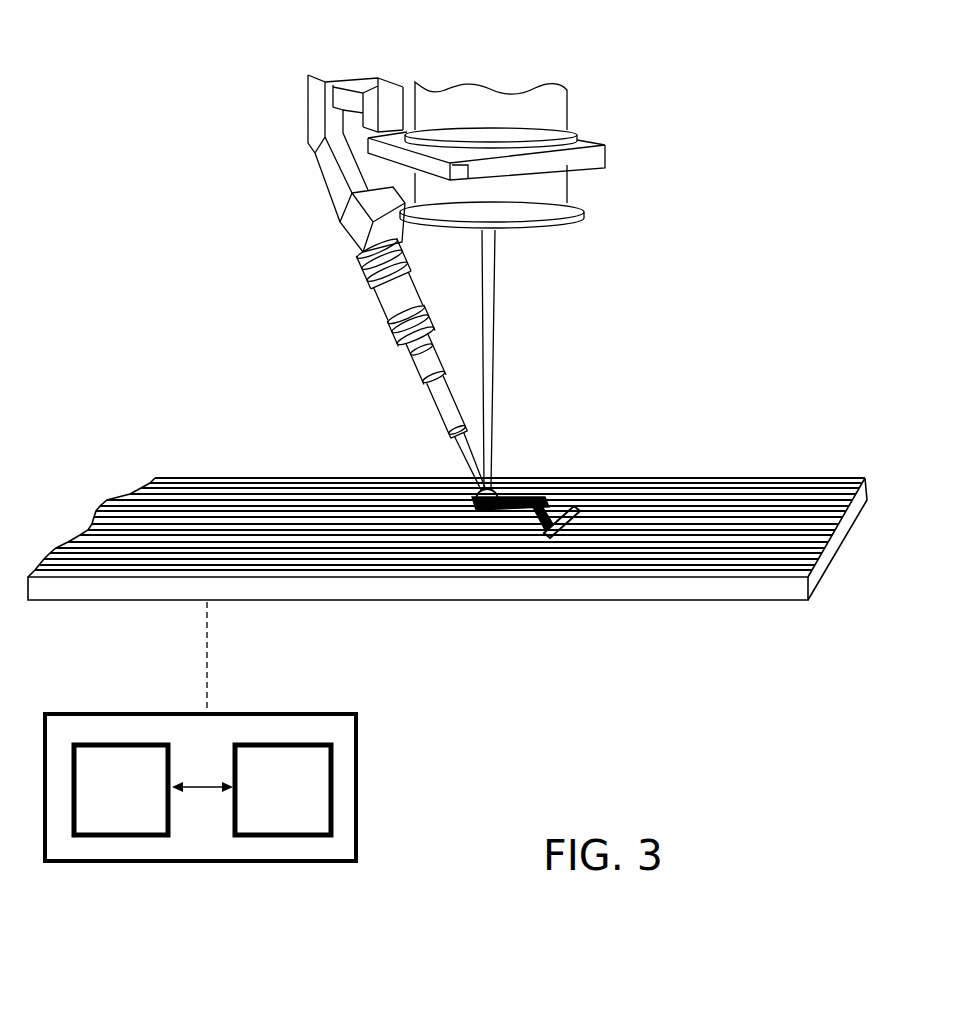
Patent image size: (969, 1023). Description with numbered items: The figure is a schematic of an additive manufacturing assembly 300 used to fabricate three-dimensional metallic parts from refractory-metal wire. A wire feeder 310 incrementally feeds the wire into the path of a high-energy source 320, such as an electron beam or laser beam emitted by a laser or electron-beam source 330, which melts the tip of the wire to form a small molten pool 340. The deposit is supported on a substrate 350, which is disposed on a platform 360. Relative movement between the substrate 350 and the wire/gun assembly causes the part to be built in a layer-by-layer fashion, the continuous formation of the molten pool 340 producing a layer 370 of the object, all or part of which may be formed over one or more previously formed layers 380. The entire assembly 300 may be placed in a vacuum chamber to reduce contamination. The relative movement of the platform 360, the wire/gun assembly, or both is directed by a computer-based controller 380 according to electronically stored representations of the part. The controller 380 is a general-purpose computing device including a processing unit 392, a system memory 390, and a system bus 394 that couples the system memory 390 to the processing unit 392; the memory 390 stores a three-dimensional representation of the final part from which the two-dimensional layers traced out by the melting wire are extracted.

The additive manufacturing assembly 300 is at (222, 182).
The wire feeder 310 is at (376, 300).
The high-energy source 320 is at (500, 303).
The laser or electron-beam source 330 is at (509, 102).
The molten pool 340 is at (462, 492).
The substrate 350 is at (572, 503).
The platform 360 is at (766, 478).
The layer 370 is at (282, 498).
The computer-based controller 380 is at (528, 499).
The system memory 390 is at (141, 799).
The processing unit 392 is at (301, 809).
The system bus 394 is at (196, 782).